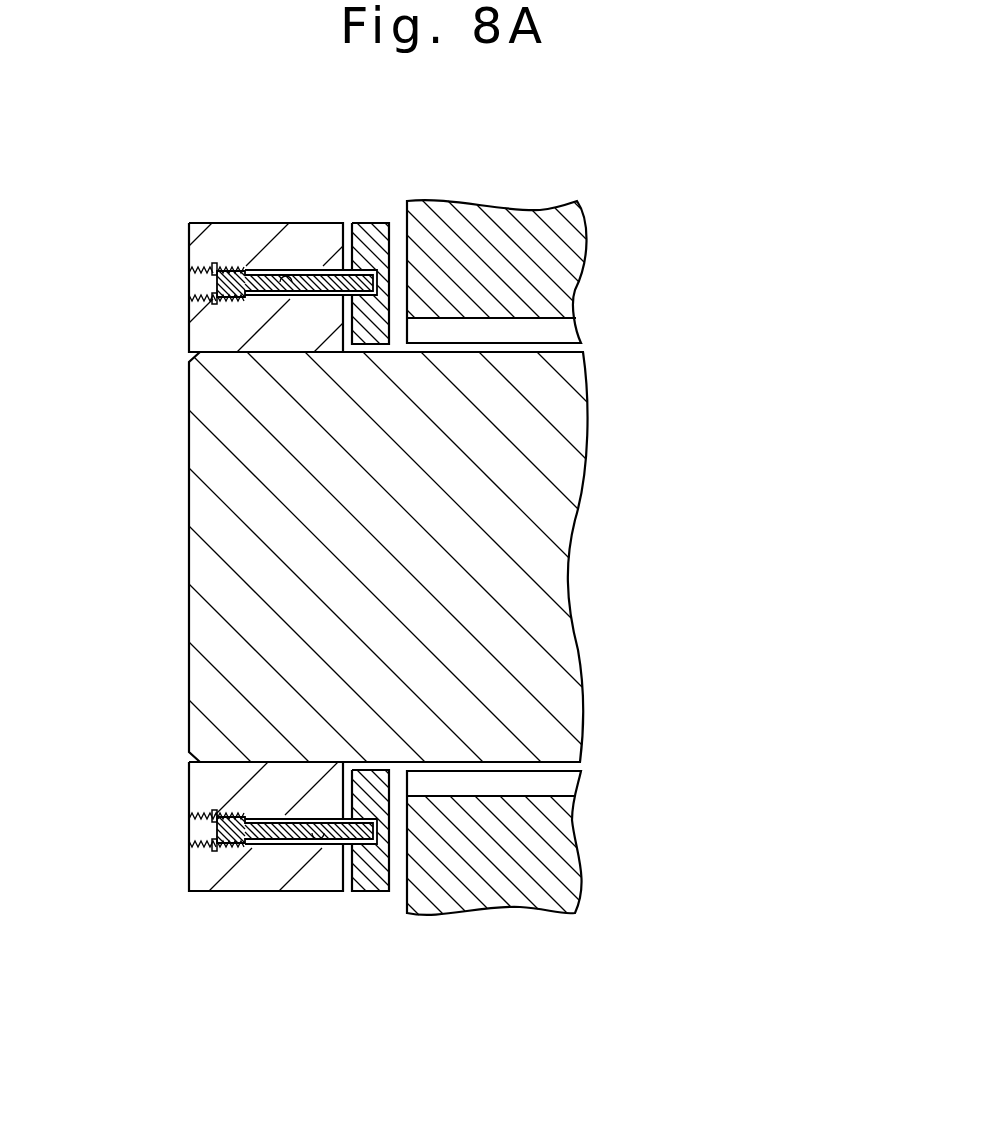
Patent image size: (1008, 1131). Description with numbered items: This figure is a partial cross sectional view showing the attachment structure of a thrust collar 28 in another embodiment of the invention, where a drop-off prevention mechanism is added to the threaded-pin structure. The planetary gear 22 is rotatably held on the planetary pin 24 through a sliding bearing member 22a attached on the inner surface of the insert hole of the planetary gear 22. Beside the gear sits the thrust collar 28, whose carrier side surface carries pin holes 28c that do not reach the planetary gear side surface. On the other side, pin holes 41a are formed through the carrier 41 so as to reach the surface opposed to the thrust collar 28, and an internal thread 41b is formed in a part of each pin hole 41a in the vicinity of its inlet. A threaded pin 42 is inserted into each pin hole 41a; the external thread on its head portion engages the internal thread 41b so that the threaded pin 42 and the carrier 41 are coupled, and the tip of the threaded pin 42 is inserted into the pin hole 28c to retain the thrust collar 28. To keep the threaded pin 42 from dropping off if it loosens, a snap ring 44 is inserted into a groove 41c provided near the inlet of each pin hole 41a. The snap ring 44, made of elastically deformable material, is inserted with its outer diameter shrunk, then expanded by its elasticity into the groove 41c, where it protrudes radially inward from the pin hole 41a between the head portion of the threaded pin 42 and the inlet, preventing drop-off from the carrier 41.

The planetary gear 22 is at (578, 232).
The sliding bearing member 22a is at (568, 333).
The planetary pin 24 is at (198, 522).
The thrust collar 28 is at (364, 230).
The pin hole 28c is at (380, 282).
The carrier 41 is at (205, 330).
The pin hole 41a is at (285, 278).
The internal thread 41b is at (212, 297).
The groove 41c is at (217, 266).
The threaded pin 42 is at (216, 272).
The snap ring 44 is at (212, 268).